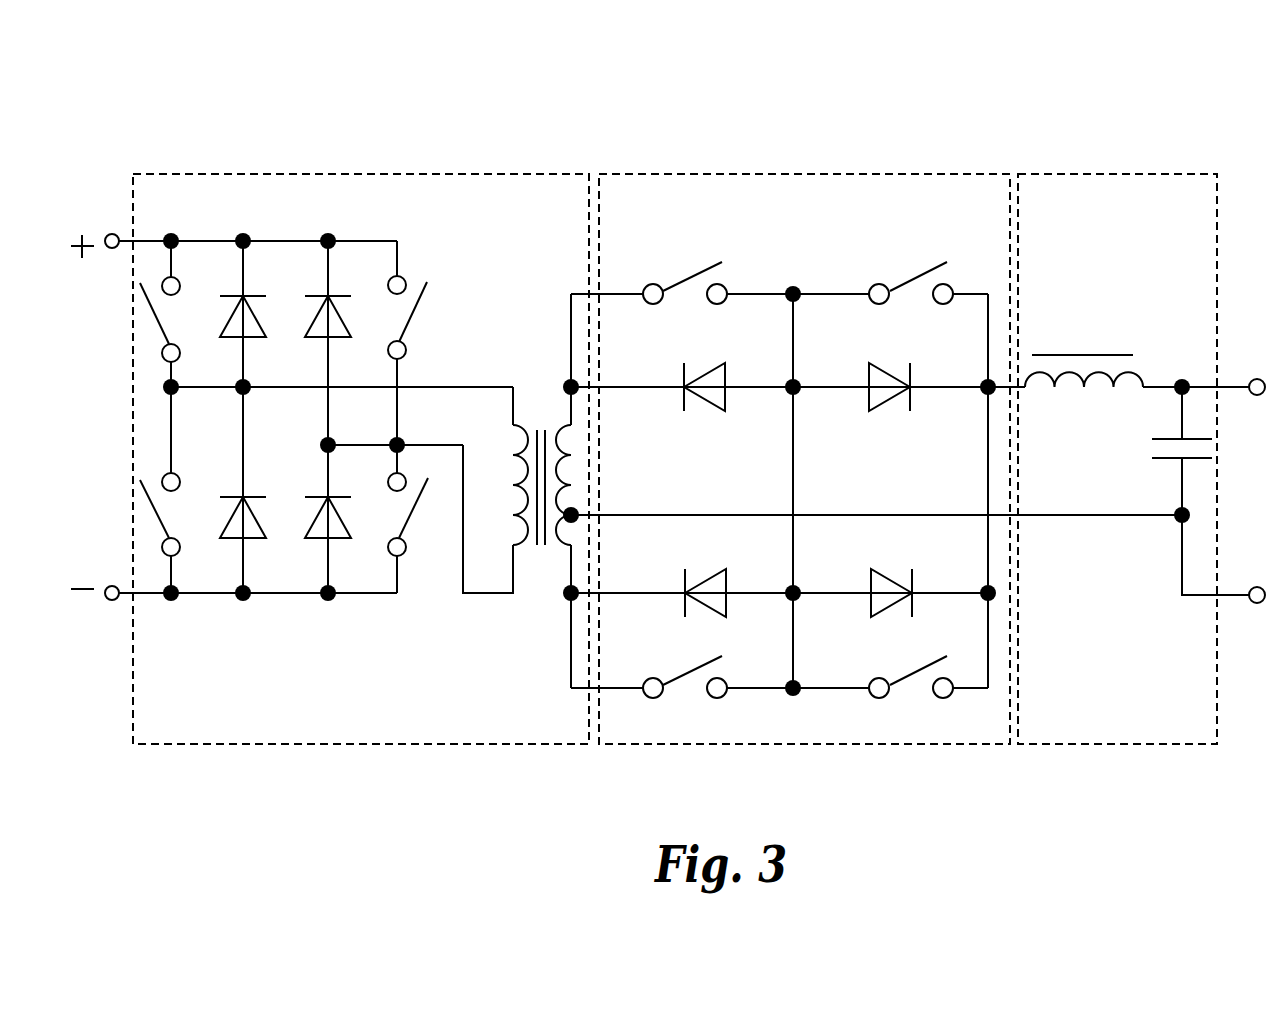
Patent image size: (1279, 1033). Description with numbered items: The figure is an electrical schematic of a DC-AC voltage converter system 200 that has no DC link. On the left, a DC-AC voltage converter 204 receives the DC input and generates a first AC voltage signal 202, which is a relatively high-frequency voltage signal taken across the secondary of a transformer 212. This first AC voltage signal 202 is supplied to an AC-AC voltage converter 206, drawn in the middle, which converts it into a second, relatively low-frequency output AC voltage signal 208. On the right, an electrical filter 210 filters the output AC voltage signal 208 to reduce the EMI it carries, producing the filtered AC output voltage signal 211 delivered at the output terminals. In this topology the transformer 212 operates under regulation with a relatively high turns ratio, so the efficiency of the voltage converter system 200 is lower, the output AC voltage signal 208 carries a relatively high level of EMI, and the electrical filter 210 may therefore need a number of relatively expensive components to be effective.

The DC-AC voltage converter system 200 is at (485, 60).
The first AC voltage signal 202 is at (619, 676).
The DC-AC voltage converter 204 is at (338, 173).
The AC-AC voltage converter 206 is at (815, 173).
The output AC voltage signal 208 is at (944, 504).
The electrical filter 210 is at (1145, 173).
The filtered AC output voltage signal 211 is at (1257, 407).
The transformer 212 is at (540, 565).